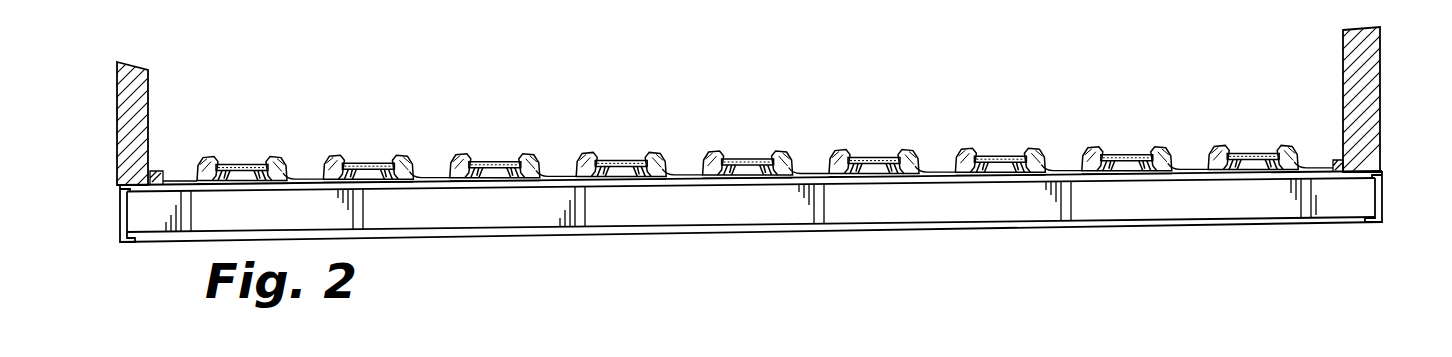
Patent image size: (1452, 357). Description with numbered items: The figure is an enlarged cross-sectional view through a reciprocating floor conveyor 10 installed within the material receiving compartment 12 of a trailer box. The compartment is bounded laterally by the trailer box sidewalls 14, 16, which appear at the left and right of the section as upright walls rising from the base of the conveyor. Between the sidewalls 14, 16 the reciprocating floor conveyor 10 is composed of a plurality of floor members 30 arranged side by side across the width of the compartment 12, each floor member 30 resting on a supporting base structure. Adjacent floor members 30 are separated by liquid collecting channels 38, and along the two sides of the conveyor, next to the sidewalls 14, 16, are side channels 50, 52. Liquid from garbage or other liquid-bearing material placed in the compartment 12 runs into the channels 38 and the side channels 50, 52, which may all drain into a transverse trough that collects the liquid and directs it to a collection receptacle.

The reciprocating floor conveyor 10 is at (550, 112).
The material receiving compartment 12 is at (1172, 102).
The sidewall 14 is at (137, 64).
The sidewall 16 is at (1367, 92).
The floor member 30 is at (243, 158).
The liquid collecting channel 38 is at (303, 176).
The side channel 50 is at (177, 165).
The side channel 52 is at (1318, 158).